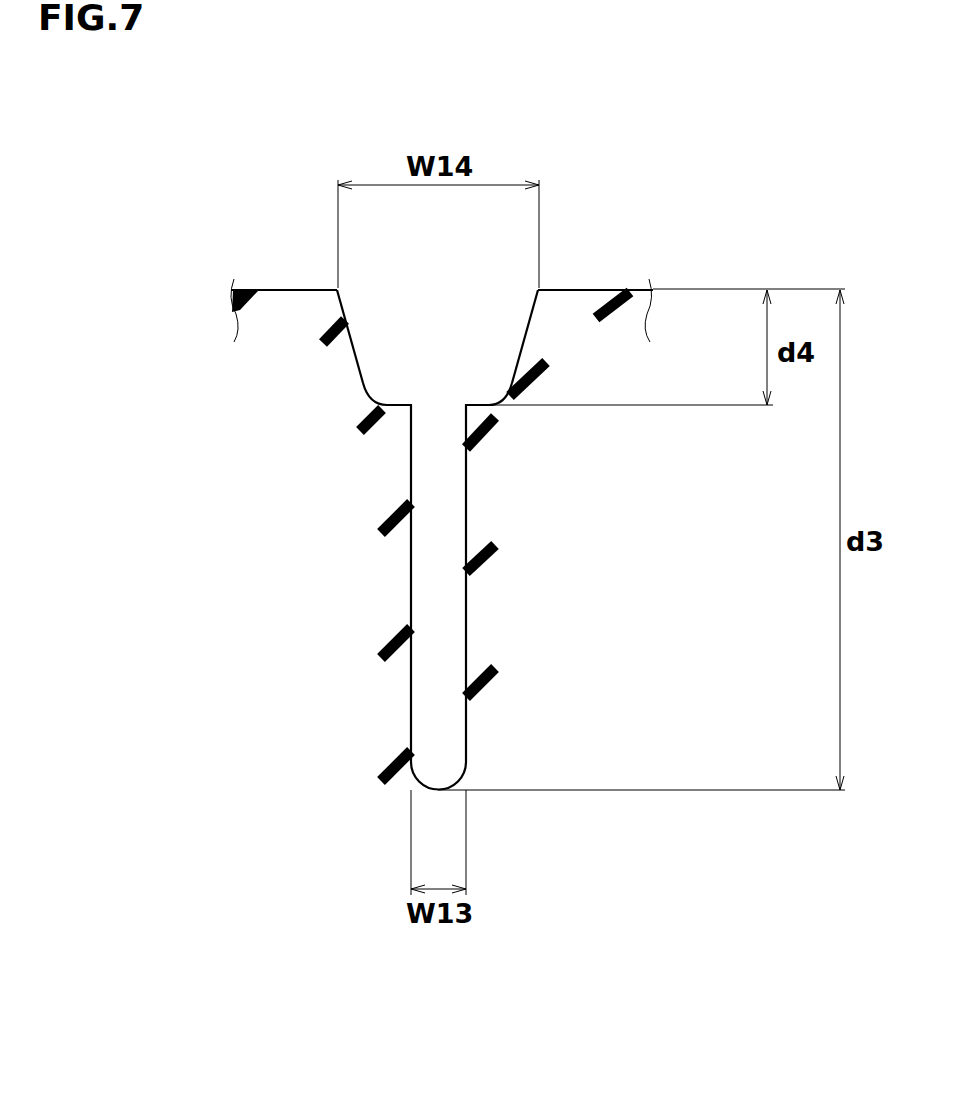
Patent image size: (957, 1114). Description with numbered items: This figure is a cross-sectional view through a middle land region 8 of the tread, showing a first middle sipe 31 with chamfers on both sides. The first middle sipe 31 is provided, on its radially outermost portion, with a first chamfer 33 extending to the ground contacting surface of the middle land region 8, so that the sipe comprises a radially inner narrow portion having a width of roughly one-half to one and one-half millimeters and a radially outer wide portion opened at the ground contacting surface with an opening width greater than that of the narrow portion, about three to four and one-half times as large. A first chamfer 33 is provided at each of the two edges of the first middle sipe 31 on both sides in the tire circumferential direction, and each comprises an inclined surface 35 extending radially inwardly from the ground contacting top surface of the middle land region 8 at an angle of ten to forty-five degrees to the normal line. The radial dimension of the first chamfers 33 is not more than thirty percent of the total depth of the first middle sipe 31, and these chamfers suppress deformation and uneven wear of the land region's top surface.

The middle land region 8 is at (569, 202).
The first middle sipe 31 is at (434, 662).
The first chamfer 33 is at (363, 378).
The inclined surface 35 is at (355, 325).